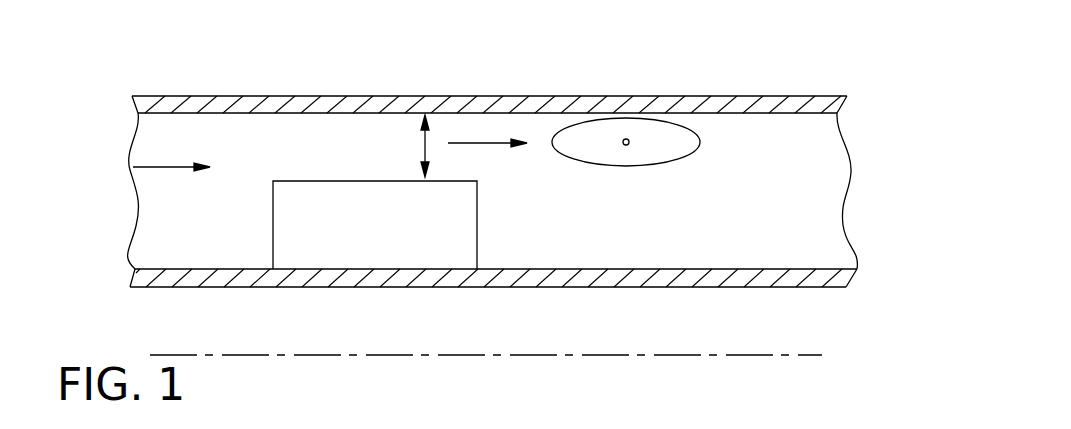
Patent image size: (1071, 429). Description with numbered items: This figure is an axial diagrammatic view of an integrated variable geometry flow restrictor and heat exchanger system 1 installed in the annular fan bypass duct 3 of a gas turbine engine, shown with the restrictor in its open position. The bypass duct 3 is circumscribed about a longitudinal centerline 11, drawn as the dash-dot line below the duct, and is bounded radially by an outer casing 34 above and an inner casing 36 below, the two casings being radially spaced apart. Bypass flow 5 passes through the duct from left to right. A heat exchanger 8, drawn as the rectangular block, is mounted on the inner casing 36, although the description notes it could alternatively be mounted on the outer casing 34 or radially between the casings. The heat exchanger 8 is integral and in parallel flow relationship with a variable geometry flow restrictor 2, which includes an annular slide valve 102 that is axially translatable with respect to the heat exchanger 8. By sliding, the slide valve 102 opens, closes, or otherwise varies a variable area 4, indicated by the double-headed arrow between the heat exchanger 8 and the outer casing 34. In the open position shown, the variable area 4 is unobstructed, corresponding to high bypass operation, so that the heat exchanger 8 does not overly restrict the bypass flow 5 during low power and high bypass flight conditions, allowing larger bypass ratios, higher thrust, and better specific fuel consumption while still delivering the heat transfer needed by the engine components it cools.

The integrated variable geometry flow restrictor and heat exchanger system 1 is at (646, 50).
The variable geometry flow restrictor 2 is at (572, 118).
The fan bypass duct 3 is at (757, 194).
The variable area 4 is at (425, 147).
The bypass flow 5 is at (172, 167).
The heat exchanger 8 is at (273, 224).
The longitudinal centerline 11 is at (597, 355).
The outer casing 34 is at (727, 96).
The inner casing 36 is at (655, 269).
The annular slide valve 102 is at (604, 166).